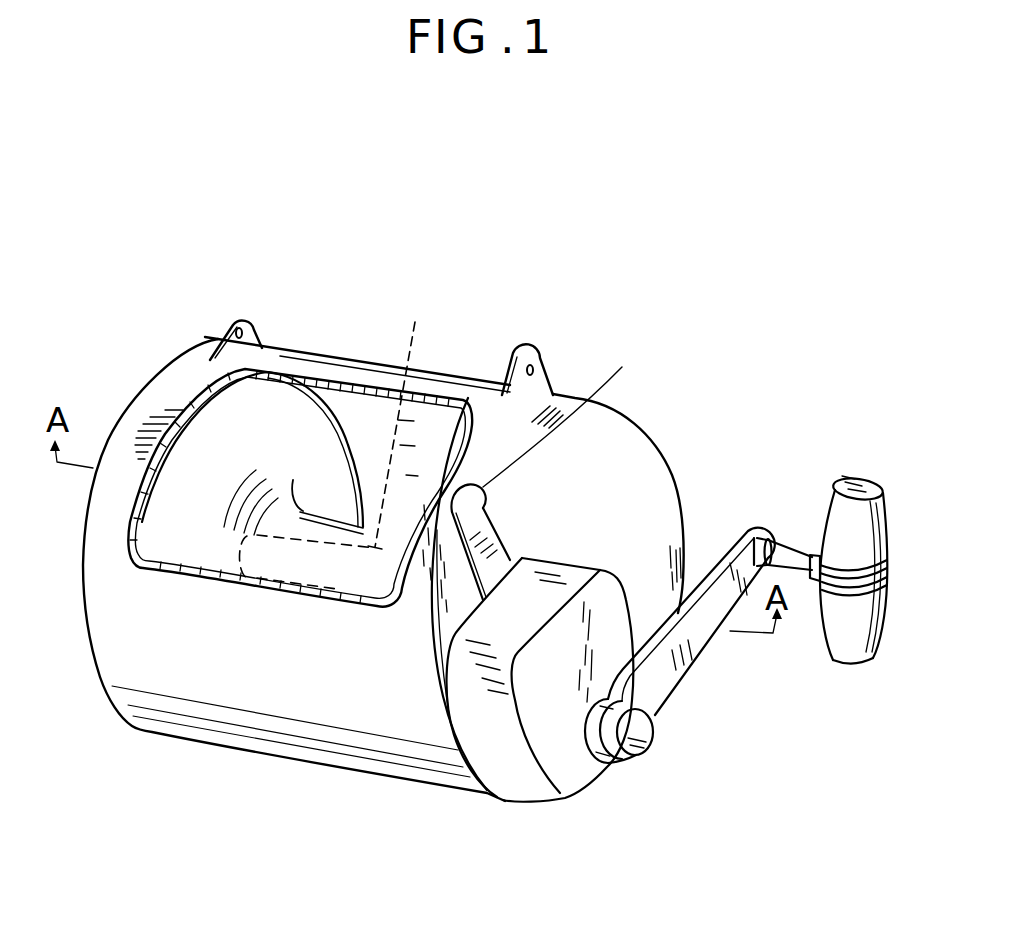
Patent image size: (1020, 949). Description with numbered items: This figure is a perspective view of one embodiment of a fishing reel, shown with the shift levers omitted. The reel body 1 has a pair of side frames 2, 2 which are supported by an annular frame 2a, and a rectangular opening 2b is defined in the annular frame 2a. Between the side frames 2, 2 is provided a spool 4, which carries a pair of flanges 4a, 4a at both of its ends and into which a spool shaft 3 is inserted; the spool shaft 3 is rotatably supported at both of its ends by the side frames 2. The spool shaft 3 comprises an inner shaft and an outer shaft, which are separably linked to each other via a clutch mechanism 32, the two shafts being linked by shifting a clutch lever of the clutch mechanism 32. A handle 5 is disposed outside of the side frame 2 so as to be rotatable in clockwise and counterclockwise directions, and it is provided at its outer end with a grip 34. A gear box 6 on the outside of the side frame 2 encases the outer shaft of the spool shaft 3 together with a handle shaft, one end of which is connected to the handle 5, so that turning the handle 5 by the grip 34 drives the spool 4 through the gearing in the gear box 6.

The reel body 1 is at (136, 742).
The side frames 2 is at (146, 388).
The annular frame 2a is at (473, 383).
The rectangular opening 2b is at (281, 398).
The spool shaft 3 is at (334, 437).
The spool 4 is at (305, 496).
The flanges 4a is at (175, 533).
The handle 5 is at (697, 640).
The gear box 6 is at (640, 573).
The clutch mechanism 32 is at (547, 464).
The grip 34 is at (837, 520).